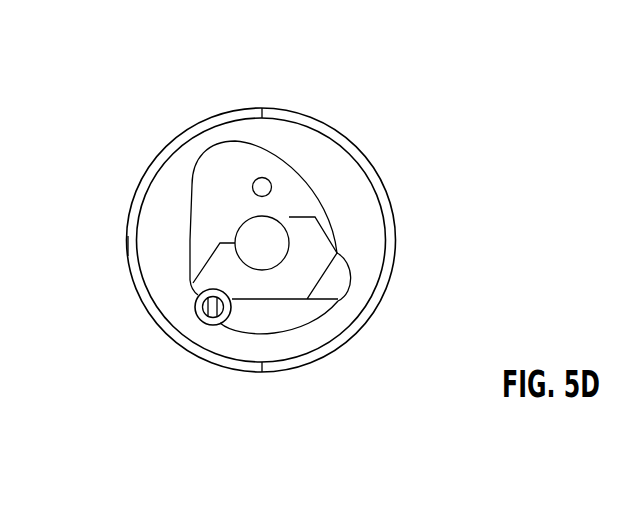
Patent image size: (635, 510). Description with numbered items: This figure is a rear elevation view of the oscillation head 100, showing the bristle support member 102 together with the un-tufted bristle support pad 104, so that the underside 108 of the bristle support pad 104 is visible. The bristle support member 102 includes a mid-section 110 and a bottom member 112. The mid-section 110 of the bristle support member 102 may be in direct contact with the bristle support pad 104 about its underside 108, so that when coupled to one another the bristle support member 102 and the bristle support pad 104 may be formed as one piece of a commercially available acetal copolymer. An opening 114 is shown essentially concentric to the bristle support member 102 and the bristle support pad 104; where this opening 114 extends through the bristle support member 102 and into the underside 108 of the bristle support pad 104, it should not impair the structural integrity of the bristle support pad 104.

The oscillation head 100 is at (422, 165).
The bristle support member 102 is at (167, 247).
The bristle support pad 104 is at (400, 300).
The underside 108 is at (163, 270).
The mid-section 110 is at (242, 182).
The bottom member 112 is at (245, 280).
The opening 114 is at (264, 243).